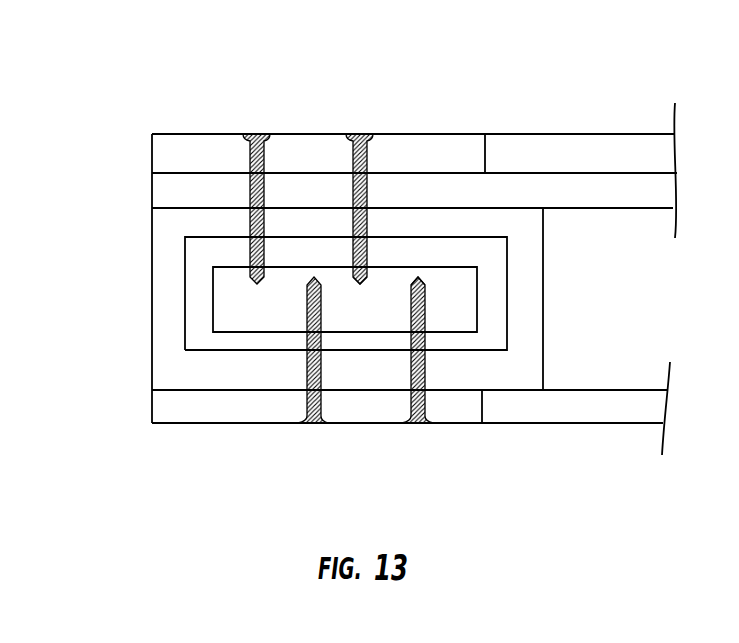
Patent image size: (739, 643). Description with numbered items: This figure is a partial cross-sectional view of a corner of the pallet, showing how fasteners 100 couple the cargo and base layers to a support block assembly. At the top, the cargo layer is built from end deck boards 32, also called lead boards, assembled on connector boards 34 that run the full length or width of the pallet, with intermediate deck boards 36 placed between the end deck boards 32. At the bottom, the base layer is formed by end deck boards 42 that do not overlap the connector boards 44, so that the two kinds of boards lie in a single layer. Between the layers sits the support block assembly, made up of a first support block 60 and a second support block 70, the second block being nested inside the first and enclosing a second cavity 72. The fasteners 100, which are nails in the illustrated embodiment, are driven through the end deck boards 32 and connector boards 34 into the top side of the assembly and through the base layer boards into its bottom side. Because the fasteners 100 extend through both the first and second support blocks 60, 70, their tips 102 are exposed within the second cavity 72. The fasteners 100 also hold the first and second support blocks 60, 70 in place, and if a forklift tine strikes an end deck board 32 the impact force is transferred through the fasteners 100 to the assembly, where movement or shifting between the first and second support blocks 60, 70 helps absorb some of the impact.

The end deck boards 32 is at (188, 133).
The connector boards 34 is at (150, 190).
The intermediate deck boards 36 is at (553, 134).
The first support block 60 is at (167, 248).
The second support block 70 is at (197, 302).
The second cavity 72 is at (294, 317).
The end deck boards 42 is at (192, 415).
The connector boards 44 is at (592, 408).
The fasteners 100 is at (258, 134).
The tips 102 is at (365, 281).